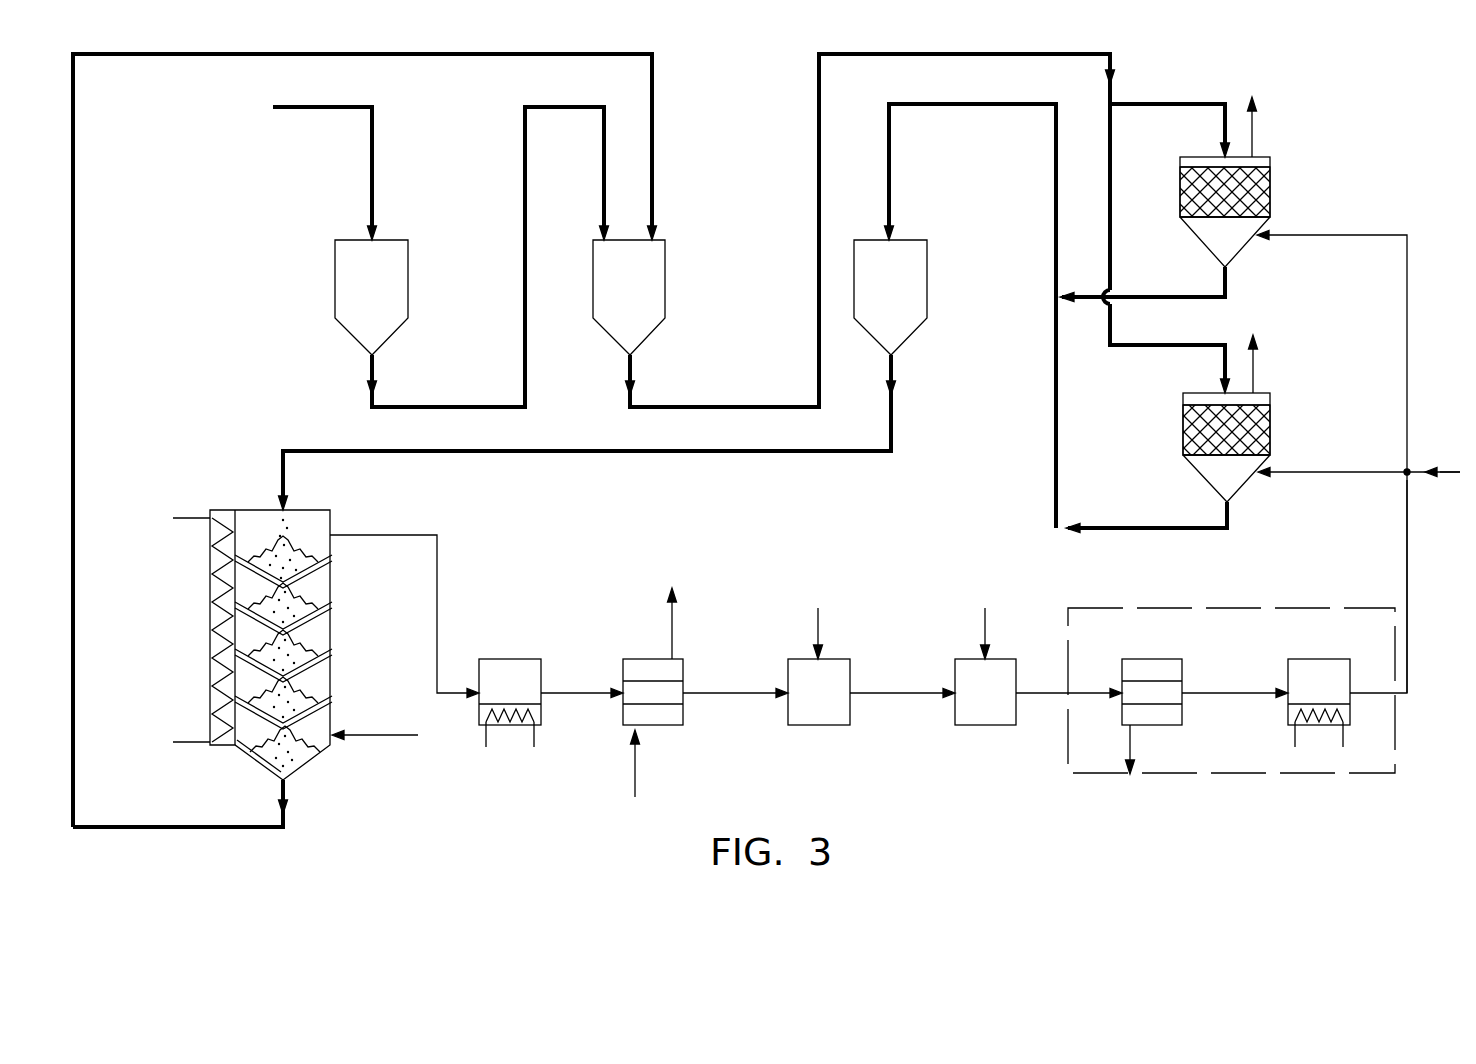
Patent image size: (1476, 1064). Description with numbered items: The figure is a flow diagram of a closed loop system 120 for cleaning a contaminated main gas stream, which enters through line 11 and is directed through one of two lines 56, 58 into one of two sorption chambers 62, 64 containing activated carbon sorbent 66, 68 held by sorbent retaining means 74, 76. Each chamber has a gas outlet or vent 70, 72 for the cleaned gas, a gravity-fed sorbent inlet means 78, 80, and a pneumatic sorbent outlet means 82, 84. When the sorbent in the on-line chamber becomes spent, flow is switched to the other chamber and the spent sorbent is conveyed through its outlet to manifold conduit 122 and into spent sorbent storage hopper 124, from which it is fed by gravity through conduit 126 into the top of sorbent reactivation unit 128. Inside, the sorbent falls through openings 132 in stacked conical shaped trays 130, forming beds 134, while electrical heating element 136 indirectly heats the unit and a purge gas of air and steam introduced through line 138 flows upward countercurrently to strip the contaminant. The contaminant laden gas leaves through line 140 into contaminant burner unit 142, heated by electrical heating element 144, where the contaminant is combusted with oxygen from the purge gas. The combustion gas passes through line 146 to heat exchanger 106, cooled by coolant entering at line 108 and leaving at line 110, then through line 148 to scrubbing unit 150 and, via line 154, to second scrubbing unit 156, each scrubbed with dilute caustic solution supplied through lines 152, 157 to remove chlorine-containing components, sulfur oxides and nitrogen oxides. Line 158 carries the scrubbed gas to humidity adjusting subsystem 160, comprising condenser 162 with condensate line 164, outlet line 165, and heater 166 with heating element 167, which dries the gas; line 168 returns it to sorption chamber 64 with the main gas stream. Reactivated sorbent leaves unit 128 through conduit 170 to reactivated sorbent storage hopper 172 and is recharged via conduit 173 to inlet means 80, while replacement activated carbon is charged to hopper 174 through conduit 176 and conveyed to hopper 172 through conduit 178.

The system for cleaning a contaminated main gas stream 120 is at (225, 172).
The conduit 170 is at (73, 390).
The conduit 176 is at (372, 172).
The hopper 174 is at (397, 332).
The conduit 178 is at (372, 363).
The reactivated sorbent storage hopper 172 is at (653, 330).
The conduit 173 is at (819, 230).
The manifold conduit 122 is at (889, 155).
The spent sorbent storage hopper 124 is at (915, 332).
The conduit 126 is at (560, 453).
The sorbent outlet means 82 is at (1040, 450).
The sorbent inlet means 80 is at (1176, 103).
The activated carbon sorbent 68 is at (1257, 203).
The sorbent retaining means 76 is at (1263, 180).
The gas outlet or vent 72 is at (1253, 130).
The line 58 is at (1335, 235).
The second sorption chamber 64 is at (1200, 242).
The sorbent outlet means 84 is at (1102, 300).
The sorbent inlet means 78 is at (1200, 343).
The activated carbon sorbent 66 is at (1258, 440).
The sorbent retaining means 74 is at (1262, 410).
The gas outlet or vent 70 is at (1255, 365).
The line 56 is at (1355, 470).
The line 11 is at (1442, 472).
The first sorption chamber 62 is at (1205, 478).
The line 168 is at (1407, 500).
The sorbent reactivation unit 128 is at (263, 508).
The electrical heating element 136 is at (200, 518).
The conical shaped trays 130 is at (315, 575).
The openings 132 is at (238, 603).
The beds 134 is at (318, 558).
The line 140 is at (350, 535).
The line 138 is at (388, 737).
The contaminant burner unit 142 is at (487, 657).
The electrical heating element 144 is at (486, 743).
The line 146 is at (568, 697).
The heat exchanger 106 is at (627, 657).
The line 110 is at (672, 622).
The line 108 is at (633, 772).
The line 148 is at (727, 697).
The scrubbing unit 150 is at (798, 657).
The line 152 is at (822, 623).
The line 154 is at (890, 697).
The second scrubbing unit 156 is at (968, 657).
The line 157 is at (988, 620).
The line 158 is at (1045, 697).
The humidity adjusting subsystem 160 is at (1192, 775).
The condenser 162 is at (1135, 657).
The condensate line 164 is at (1130, 742).
The outlet line 165 is at (1222, 690).
The heater 166 is at (1320, 657).
The heating element 167 is at (1345, 738).